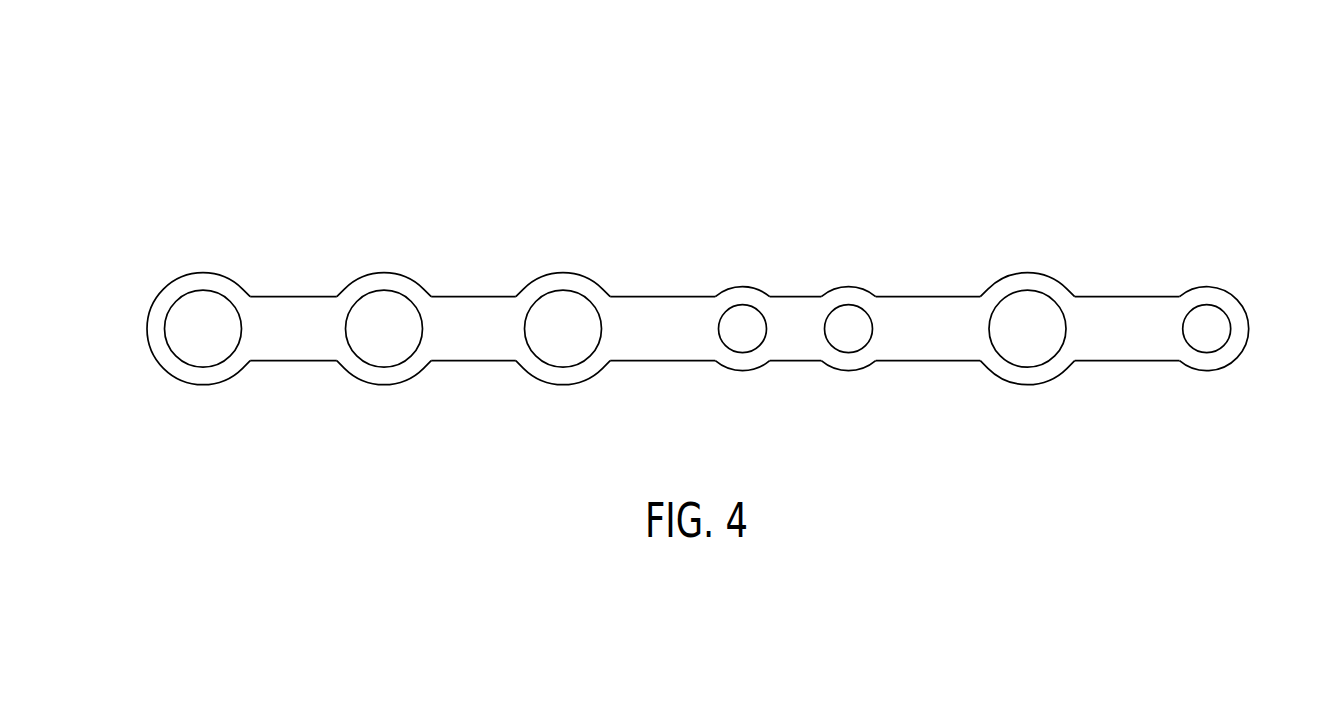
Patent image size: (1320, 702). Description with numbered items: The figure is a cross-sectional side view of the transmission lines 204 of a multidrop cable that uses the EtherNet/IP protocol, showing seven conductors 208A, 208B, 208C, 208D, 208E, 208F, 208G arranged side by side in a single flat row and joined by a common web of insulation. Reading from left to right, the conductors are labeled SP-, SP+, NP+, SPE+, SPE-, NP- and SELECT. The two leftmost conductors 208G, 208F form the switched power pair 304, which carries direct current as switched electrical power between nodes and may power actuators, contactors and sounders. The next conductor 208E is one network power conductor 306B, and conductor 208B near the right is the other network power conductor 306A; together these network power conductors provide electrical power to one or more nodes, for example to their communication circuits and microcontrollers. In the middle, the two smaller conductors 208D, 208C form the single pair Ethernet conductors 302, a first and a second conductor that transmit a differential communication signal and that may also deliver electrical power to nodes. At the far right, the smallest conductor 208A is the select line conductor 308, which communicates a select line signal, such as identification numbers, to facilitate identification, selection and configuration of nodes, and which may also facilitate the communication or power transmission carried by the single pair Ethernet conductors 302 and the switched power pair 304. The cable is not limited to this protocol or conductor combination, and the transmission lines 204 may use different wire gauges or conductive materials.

The transmission lines 204 is at (470, 128).
The conductor 208A is at (1250, 328).
The conductor 208B is at (1056, 280).
The conductor 208C is at (868, 292).
The conductor 208D is at (723, 291).
The conductor 208E is at (536, 279).
The conductor 208F is at (357, 279).
The conductor 208G is at (176, 279).
The single pair Ethernet conductors 302 is at (877, 387).
The switched power pair 304 is at (437, 387).
The network power conductor 306A is at (1078, 385).
The network power conductor 306B is at (615, 387).
The select line conductor 308 is at (1257, 387).